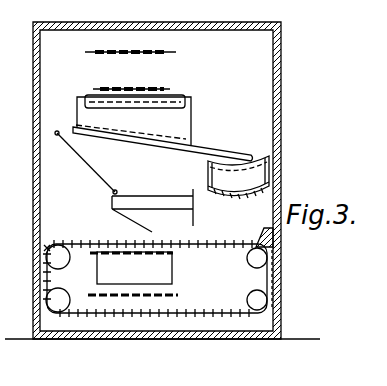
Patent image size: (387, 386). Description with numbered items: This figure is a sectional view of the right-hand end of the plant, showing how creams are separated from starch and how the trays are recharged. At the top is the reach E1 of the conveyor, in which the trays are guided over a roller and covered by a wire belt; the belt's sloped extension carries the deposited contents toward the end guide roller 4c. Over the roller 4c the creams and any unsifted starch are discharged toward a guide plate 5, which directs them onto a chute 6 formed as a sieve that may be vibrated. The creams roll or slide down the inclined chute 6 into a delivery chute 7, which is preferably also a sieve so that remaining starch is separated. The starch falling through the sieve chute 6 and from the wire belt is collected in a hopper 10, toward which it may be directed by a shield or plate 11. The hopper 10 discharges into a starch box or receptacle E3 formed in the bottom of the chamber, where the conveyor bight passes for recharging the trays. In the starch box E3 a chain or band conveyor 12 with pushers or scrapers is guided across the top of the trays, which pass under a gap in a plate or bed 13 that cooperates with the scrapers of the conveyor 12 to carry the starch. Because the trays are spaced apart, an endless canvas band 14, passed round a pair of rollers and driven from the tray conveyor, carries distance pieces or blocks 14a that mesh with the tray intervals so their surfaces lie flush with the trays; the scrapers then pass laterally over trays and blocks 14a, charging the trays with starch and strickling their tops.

The reach of the conveyor E1 is at (130, 70).
The end guide roller 4c is at (187, 96).
The guide plate 5 is at (134, 121).
The chute 6 is at (159, 141).
The delivery chute 7 is at (238, 177).
The hopper 10 is at (152, 210).
The shield or plate 11 is at (95, 170).
The chain or band conveyor 12 is at (213, 243).
The plate or bed 13 is at (230, 279).
The endless canvas band 14 is at (133, 273).
The distance pieces or blocks 14a is at (68, 278).
The starch box or receptacle E3 is at (157, 278).